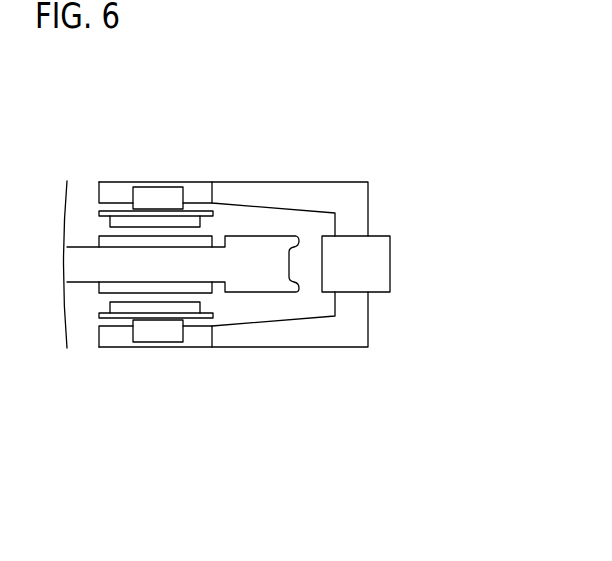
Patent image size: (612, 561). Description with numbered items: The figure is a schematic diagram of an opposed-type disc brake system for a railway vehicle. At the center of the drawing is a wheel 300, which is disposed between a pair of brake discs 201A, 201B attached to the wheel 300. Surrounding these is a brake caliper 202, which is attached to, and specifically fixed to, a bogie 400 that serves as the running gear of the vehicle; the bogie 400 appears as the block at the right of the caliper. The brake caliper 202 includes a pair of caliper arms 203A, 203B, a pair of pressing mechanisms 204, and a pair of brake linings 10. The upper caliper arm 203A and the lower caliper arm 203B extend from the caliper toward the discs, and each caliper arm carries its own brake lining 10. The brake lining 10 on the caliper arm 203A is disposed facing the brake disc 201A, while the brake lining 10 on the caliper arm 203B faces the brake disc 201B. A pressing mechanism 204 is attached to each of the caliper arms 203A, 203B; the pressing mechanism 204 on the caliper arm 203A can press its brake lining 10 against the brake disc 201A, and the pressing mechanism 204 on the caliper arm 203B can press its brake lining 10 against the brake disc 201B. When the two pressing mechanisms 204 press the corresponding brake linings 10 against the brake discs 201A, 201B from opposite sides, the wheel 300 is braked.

The brake lining 10 is at (192, 218).
The brake disc 201A is at (118, 242).
The brake disc 201B is at (120, 287).
The brake caliper 202 is at (352, 212).
The caliper arm 203A is at (288, 195).
The caliper arm 203B is at (290, 332).
The pressing mechanism 204 is at (158, 195).
The wheel 300 is at (256, 260).
The bogie 400 is at (367, 266).